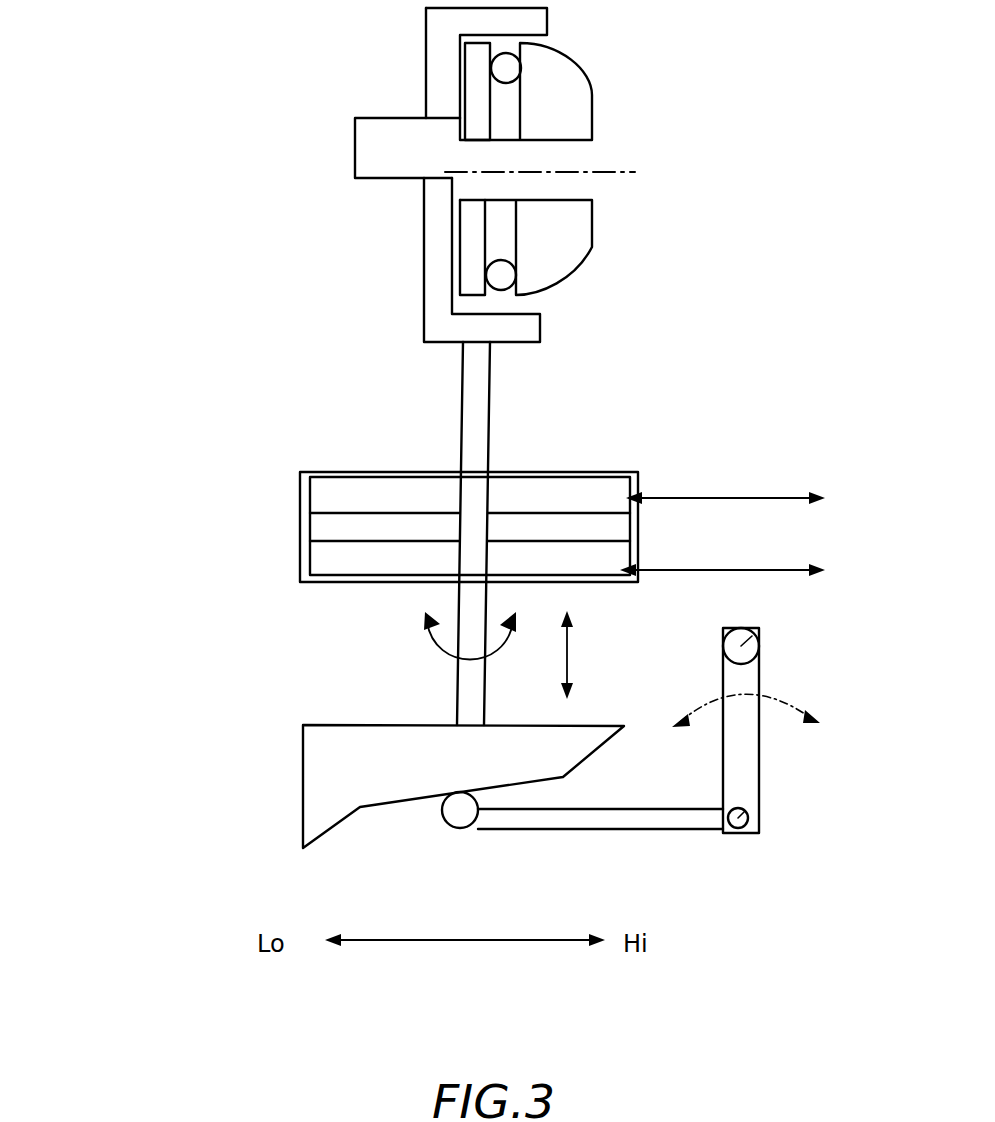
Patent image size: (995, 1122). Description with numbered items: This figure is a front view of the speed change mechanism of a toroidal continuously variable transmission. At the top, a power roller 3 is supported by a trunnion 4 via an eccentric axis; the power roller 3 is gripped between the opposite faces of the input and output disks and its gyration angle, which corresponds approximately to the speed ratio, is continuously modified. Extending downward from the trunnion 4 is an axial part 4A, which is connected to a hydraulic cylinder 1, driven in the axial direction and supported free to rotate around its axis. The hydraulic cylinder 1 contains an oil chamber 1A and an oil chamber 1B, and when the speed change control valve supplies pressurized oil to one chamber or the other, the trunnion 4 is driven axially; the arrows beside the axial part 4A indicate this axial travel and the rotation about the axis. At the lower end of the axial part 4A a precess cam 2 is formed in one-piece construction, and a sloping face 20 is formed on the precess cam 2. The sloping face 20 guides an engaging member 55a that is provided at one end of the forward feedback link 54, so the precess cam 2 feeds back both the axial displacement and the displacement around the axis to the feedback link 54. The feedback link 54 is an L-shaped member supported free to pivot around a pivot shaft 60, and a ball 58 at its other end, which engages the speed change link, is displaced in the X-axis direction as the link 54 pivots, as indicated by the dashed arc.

The hydraulic cylinder 1 is at (287, 540).
The oil chamber 1A is at (387, 497).
The oil chamber 1B is at (357, 562).
The precess cam 2 is at (291, 774).
The power roller 3 is at (592, 252).
The trunnion 4 is at (410, 275).
The axial part 4A is at (462, 687).
The sloping face 20 is at (525, 782).
The forward feedback link 54 is at (772, 782).
The engaging member 55a is at (458, 828).
The ball 58 is at (760, 630).
The pivot shaft 60 is at (733, 830).